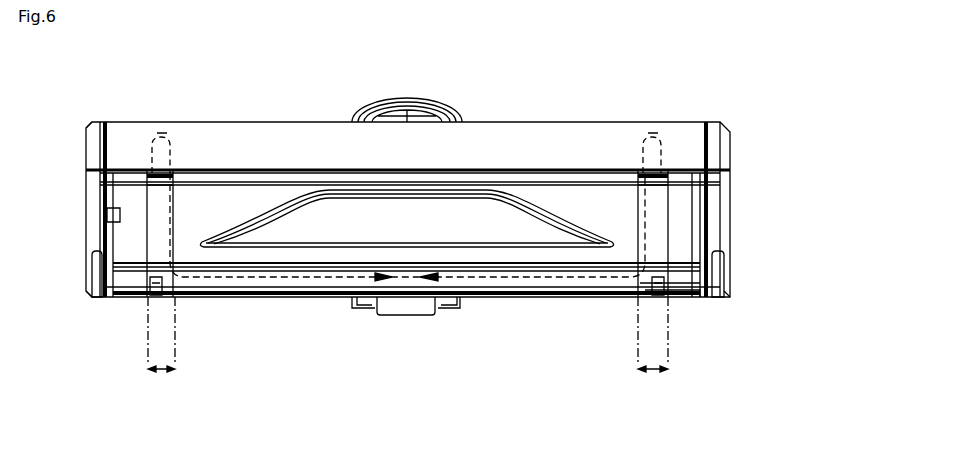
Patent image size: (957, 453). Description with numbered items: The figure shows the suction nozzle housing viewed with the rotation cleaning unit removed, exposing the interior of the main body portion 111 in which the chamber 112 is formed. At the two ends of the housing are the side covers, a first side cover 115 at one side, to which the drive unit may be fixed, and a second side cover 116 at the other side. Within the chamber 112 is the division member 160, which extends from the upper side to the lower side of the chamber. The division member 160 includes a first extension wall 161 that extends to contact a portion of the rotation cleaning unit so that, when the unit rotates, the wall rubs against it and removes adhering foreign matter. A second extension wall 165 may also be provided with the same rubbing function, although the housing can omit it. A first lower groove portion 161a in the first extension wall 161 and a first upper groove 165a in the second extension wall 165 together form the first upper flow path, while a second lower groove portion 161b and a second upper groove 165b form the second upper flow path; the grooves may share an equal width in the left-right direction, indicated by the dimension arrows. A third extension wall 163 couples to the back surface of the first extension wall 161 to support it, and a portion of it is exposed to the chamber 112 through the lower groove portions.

The main body portion 111 is at (274, 140).
The chamber 112 is at (215, 218).
The first side cover 115 is at (722, 214).
The second side cover 116 is at (96, 214).
The division member 160 is at (298, 262).
The first extension wall 161 is at (506, 255).
The first lower groove portion 161a is at (655, 238).
The second lower groove portion 161b is at (163, 238).
The third extension wall 163 is at (640, 285).
The second extension wall 165 is at (504, 186).
The first upper groove 165a is at (653, 133).
The second upper groove 165b is at (162, 133).